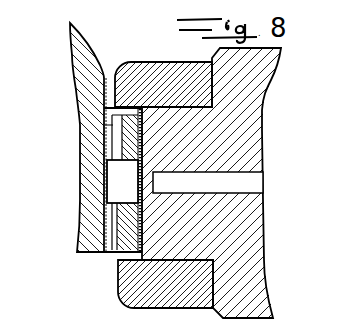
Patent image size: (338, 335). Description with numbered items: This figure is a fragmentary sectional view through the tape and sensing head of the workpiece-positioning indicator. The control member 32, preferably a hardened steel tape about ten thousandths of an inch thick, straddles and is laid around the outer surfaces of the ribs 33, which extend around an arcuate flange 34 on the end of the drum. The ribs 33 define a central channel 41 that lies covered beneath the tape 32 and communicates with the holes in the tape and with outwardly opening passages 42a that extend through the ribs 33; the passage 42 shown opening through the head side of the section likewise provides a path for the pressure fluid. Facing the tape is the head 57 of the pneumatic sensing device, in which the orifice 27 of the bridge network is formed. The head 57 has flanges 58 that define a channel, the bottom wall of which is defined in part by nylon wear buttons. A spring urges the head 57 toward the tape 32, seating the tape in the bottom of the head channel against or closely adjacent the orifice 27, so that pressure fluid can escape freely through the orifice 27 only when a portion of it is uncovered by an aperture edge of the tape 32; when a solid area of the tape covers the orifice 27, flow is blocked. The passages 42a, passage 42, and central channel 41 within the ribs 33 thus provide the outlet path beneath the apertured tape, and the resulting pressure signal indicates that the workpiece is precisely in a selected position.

The arcuate flange 34 is at (85, 53).
The outwardly opening passages 42a is at (103, 92).
The flanges 58 is at (160, 63).
The head 57 is at (250, 127).
The passage 42 is at (258, 182).
The control member 32 is at (146, 142).
The ribs 33 is at (141, 148).
The orifice 27 is at (146, 189).
The central channel 41 is at (107, 168).